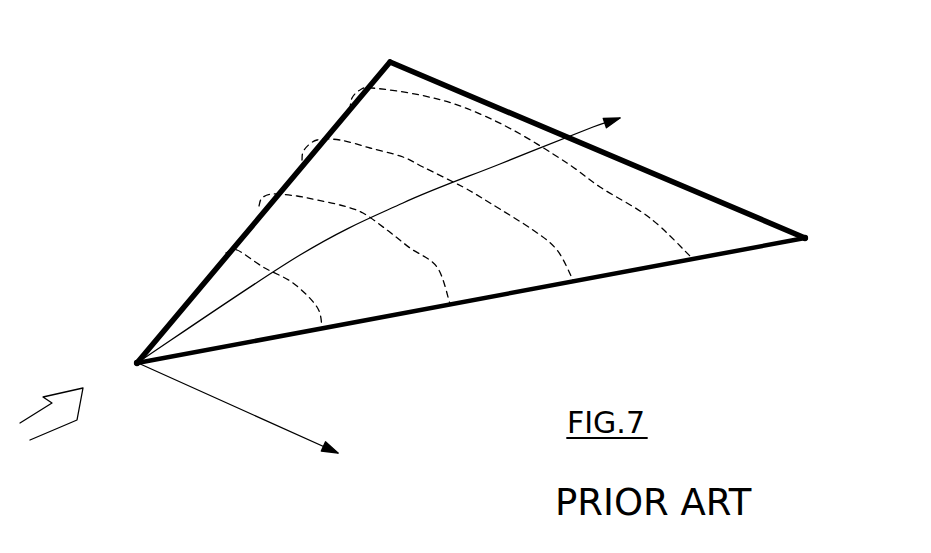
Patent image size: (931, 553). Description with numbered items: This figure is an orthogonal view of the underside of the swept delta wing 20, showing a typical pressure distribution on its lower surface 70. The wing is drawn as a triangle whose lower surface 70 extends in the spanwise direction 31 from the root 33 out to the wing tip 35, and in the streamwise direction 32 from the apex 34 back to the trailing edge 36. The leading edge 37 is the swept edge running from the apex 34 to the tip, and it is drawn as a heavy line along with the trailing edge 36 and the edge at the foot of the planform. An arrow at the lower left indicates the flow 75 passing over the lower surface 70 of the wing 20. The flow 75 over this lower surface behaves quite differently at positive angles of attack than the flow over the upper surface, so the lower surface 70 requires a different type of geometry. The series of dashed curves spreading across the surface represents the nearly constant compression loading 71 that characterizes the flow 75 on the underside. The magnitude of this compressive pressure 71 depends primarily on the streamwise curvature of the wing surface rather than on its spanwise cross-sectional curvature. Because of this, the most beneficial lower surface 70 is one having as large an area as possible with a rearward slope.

The swept delta wing 20 is at (448, 258).
The spanwise direction 31 is at (227, 405).
The streamwise direction 32 is at (593, 127).
The root 33 is at (403, 203).
The apex 34 is at (135, 367).
The wing tip 35 is at (804, 240).
The trailing edge 36 is at (700, 193).
The leading edge 37 is at (353, 327).
The lower surface 70 is at (537, 277).
The compression loading 71 is at (237, 250).
The flow 75 is at (42, 423).